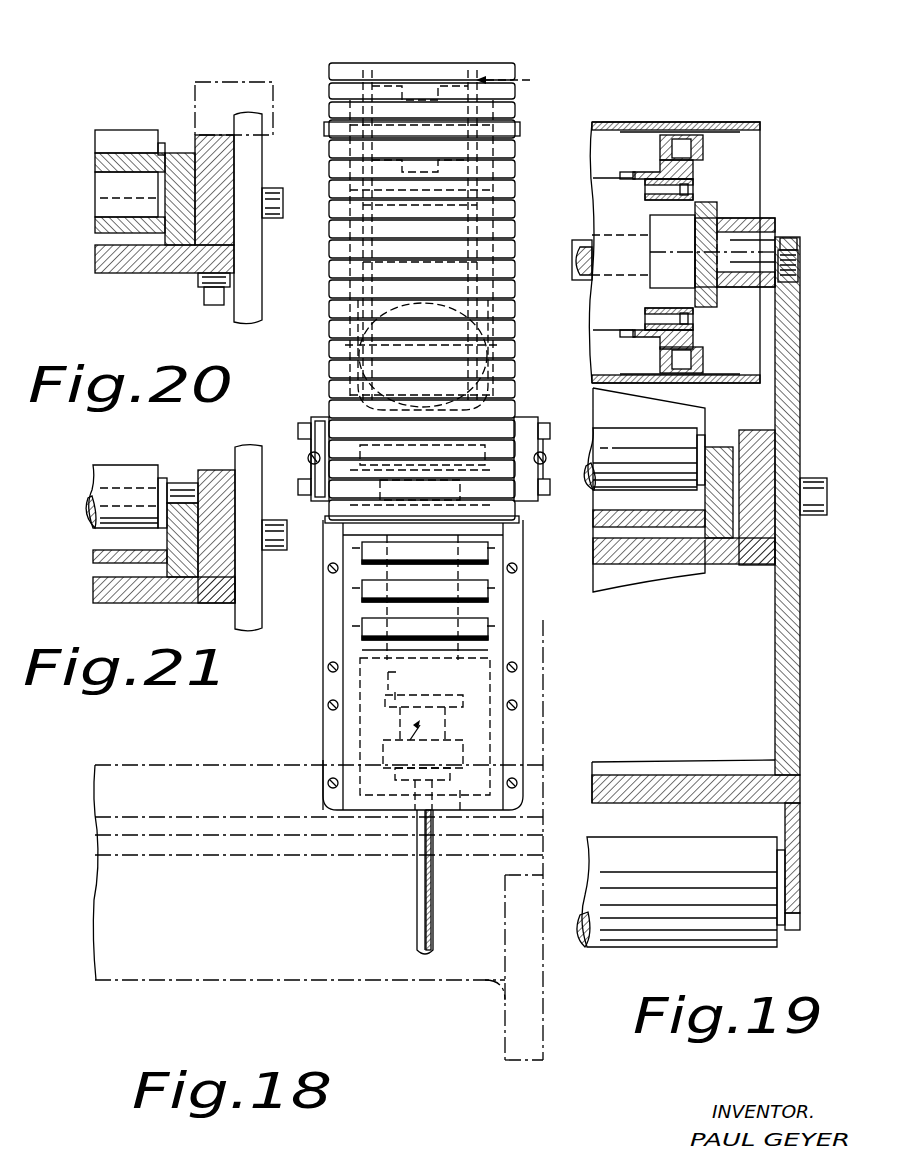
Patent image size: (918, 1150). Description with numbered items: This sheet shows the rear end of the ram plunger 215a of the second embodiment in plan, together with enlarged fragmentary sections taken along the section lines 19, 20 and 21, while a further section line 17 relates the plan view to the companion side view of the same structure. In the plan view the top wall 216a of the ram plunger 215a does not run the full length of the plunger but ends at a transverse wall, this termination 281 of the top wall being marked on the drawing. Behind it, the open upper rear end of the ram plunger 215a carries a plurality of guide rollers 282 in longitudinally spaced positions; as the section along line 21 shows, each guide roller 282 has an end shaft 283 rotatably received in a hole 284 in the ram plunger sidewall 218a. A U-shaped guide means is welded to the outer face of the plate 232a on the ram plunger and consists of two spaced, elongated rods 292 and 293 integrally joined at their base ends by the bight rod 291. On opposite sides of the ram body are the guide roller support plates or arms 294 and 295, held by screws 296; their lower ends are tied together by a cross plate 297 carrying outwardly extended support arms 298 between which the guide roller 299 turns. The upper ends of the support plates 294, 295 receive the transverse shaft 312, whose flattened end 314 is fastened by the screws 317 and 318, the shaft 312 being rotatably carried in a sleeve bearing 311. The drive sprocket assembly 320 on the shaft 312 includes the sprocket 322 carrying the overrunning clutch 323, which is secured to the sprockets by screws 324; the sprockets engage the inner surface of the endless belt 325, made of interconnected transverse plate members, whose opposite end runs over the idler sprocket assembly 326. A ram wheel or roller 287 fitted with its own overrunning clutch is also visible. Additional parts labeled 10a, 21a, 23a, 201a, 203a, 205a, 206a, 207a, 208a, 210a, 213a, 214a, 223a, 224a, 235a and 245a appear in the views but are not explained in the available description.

In FIG. 18, the section line 17— 17 is at (548, 80).
In FIG. 18, the section line 19— 19 is at (447, 424).
In FIG. 18, the section line 20— 20 is at (470, 669).
In FIG. 18, the section line 21— 21 is at (468, 577).
In FIG. 18, the frame 10a is at (200, 765).
In FIG. 18, the section 21a is at (518, 656).
In FIG. 20, the section 21a is at (215, 103).
In FIG. 18, the housing edge 23a is at (320, 784).
In FIG. 19, the base plate 201a is at (670, 552).
In FIG. 20, the base plate 201a is at (110, 268).
In FIG. 21, the base plate 201a is at (108, 600).
In FIG. 18, the support block 203a is at (315, 445).
In FIG. 19, the support block 203a is at (757, 430).
In FIG. 20, the support block 203a is at (228, 248).
In FIG. 18, the roller support 205a is at (365, 648).
In FIG. 18, the housing wall 206a is at (517, 632).
In FIG. 18, the screw 207a is at (330, 784).
In FIG. 18, the screw 208a is at (517, 708).
In FIG. 20, the bolt 210a is at (200, 282).
In FIG. 18, the screw 213a is at (333, 566).
In FIG. 18, the screw 214a is at (517, 572).
In FIG. 18, the ram plunger 215a is at (458, 784).
In FIG. 18, the top wall 216a is at (370, 758).
In FIG. 20, the top wall 216a is at (103, 165).
In FIG. 19, the ram plunger sidewall 218a is at (768, 460).
In FIG. 20, the ram plunger sidewall 218a is at (162, 204).
In FIG. 21, the ram plunger sidewall 218a is at (175, 535).
In FIG. 19, the bearing plate 223a is at (692, 522).
In FIG. 20, the bearing plate 223a is at (105, 230).
In FIG. 21, the bearing plate 223a is at (95, 560).
In FIG. 18, the cam member 224a is at (425, 734).
In FIG. 18, the plate 232a is at (490, 352).
In FIG. 18, the lever 235a is at (385, 675).
In FIG. 18, the rod 245a is at (417, 892).
In FIG. 18, the termination of the top wall 281 is at (388, 678).
In FIG. 18, the guide rollers 282 is at (372, 550).
In FIG. 19, the guide rollers 282 is at (640, 438).
In FIG. 20, the guide rollers 282 is at (115, 130).
In FIG. 21, the guide rollers 282 is at (118, 475).
In FIG. 21, the end shaft 283 is at (180, 481).
In FIG. 21, the hole 284 is at (220, 468).
In FIG. 19, the ram wheel or roller 287 is at (646, 578).
In FIG. 18, the bight portion or rod 291 is at (422, 355).
In FIG. 18, the elongated rod 292 is at (370, 211).
In FIG. 18, the elongated rod 293 is at (472, 244).
In FIG. 18, the guide roller support plate or arm 294 is at (326, 420).
In FIG. 18, the guide roller support plate or arm 295 is at (320, 506).
In FIG. 19, the guide roller support plate or arm 295 is at (800, 345).
In FIG. 20, the guide roller support plate or arm 295 is at (255, 297).
In FIG. 21, the guide roller support plate or arm 295 is at (248, 538).
In FIG. 18, the screws 296 is at (303, 430).
In FIG. 19, the screws 296 is at (813, 512).
In FIG. 20, the screws 296 is at (270, 198).
In FIG. 21, the screws 296 is at (276, 552).
In FIG. 19, the cross plate 297 is at (683, 778).
In FIG. 19, the support arms 298 is at (797, 838).
In FIG. 19, the guide roller 299 is at (698, 922).
In FIG. 19, the sleeve bearing 311 is at (768, 222).
In FIG. 19, the transverse shaft 312 is at (580, 237).
In FIG. 19, the flattened end 314 is at (799, 259).
In FIG. 18, the screw 317 is at (312, 459).
In FIG. 18, the screw 318 is at (543, 462).
In FIG. 19, the screw 318 is at (793, 240).
In FIG. 19, the drive sprocket assembly 320 is at (589, 222).
In FIG. 19, the sprocket 322 is at (695, 173).
In FIG. 19, the overrunning clutch 323 is at (595, 190).
In FIG. 19, the screws 324 is at (690, 190).
In FIG. 18, the endless belt 325 is at (518, 158).
In FIG. 19, the endless belt 325 is at (741, 124).
In FIG. 18, the idler sprocket assembly 326 is at (540, 80).